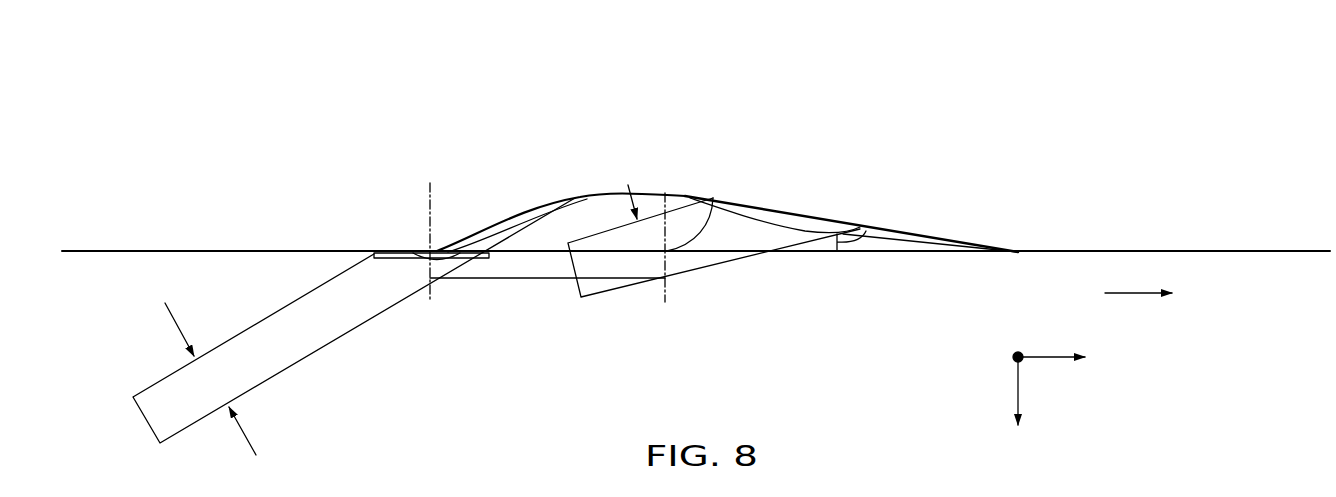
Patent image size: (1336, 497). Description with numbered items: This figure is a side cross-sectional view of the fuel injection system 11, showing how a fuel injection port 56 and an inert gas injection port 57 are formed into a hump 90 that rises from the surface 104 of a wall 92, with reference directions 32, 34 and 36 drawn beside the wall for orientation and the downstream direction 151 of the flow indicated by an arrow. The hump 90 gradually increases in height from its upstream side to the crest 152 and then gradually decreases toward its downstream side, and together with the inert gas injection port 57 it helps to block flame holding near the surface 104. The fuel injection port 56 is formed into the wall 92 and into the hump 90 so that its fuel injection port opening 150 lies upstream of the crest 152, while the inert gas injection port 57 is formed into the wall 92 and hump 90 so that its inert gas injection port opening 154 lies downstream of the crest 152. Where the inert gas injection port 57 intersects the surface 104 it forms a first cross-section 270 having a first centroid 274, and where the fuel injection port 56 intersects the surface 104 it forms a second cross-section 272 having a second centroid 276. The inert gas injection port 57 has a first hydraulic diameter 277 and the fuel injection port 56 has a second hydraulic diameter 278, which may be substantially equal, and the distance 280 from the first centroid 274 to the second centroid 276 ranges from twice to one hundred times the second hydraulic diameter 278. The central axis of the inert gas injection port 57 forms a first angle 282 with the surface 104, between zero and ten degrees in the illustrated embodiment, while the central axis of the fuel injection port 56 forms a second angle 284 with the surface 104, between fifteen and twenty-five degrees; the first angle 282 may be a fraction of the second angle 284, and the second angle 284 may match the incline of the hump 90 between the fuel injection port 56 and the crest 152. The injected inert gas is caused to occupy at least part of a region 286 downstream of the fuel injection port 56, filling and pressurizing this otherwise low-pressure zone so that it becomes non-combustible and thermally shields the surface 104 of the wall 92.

The fuel injection system 11 is at (795, 74).
The longitudinal axis 32 is at (1045, 355).
The vertical axis 34 is at (1017, 387).
The origin point 36 is at (1012, 356).
The fuel injection port 56 is at (237, 378).
The inert gas injection port 57 is at (592, 287).
The hump 90 is at (607, 223).
The wall 92 is at (89, 249).
The surface 104 is at (217, 250).
The fuel injection port opening 150 is at (504, 218).
The downstream direction 151 is at (1133, 295).
The crest 152 is at (590, 196).
The inert gas injection port opening 154 is at (785, 211).
The first cross-section 270 is at (650, 280).
The second cross-section 272 is at (413, 253).
The first centroid 274 is at (712, 198).
The second centroid 276 is at (433, 252).
The first hydraulic diameter 277 is at (653, 283).
The second hydraulic diameter 278 is at (178, 330).
The distance 280 is at (529, 280).
The first angle 282 is at (866, 231).
The second angle 284 is at (532, 247).
The region 286 is at (993, 223).